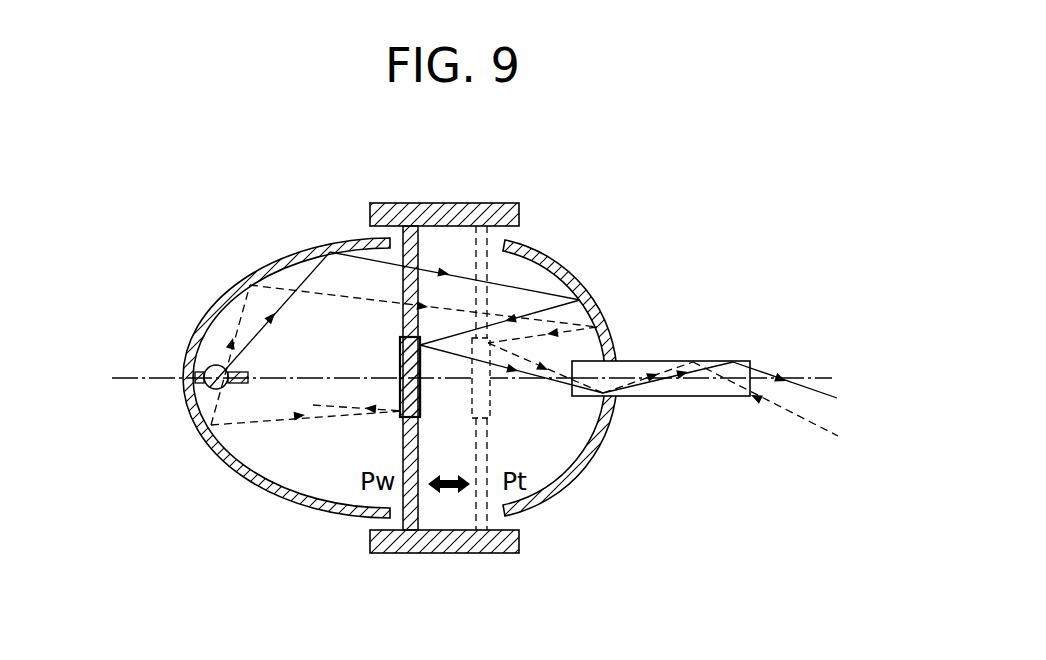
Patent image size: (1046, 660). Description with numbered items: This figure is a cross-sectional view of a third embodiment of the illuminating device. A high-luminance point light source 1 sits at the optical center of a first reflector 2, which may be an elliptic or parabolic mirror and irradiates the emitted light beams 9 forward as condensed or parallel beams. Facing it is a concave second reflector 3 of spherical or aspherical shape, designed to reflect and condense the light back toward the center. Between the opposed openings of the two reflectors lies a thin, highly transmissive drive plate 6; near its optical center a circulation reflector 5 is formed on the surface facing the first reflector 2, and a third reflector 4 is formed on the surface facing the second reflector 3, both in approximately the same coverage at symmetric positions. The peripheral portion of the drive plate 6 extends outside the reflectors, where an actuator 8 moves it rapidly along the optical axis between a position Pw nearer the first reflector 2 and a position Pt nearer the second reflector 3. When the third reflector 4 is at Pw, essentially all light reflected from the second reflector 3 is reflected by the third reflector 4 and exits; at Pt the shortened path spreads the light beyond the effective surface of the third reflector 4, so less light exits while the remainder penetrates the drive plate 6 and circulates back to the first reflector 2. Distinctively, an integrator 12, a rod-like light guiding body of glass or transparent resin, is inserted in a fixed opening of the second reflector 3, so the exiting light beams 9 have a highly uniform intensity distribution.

The light source 1 is at (203, 355).
The first reflector 2 is at (247, 478).
The second reflector 3 is at (578, 473).
The third reflector 4 is at (420, 385).
The circulation reflector 5 is at (400, 360).
The drive plate 6 is at (403, 522).
The actuator 8 is at (438, 541).
The light beams 9 is at (757, 367).
The integrator 12 is at (697, 385).